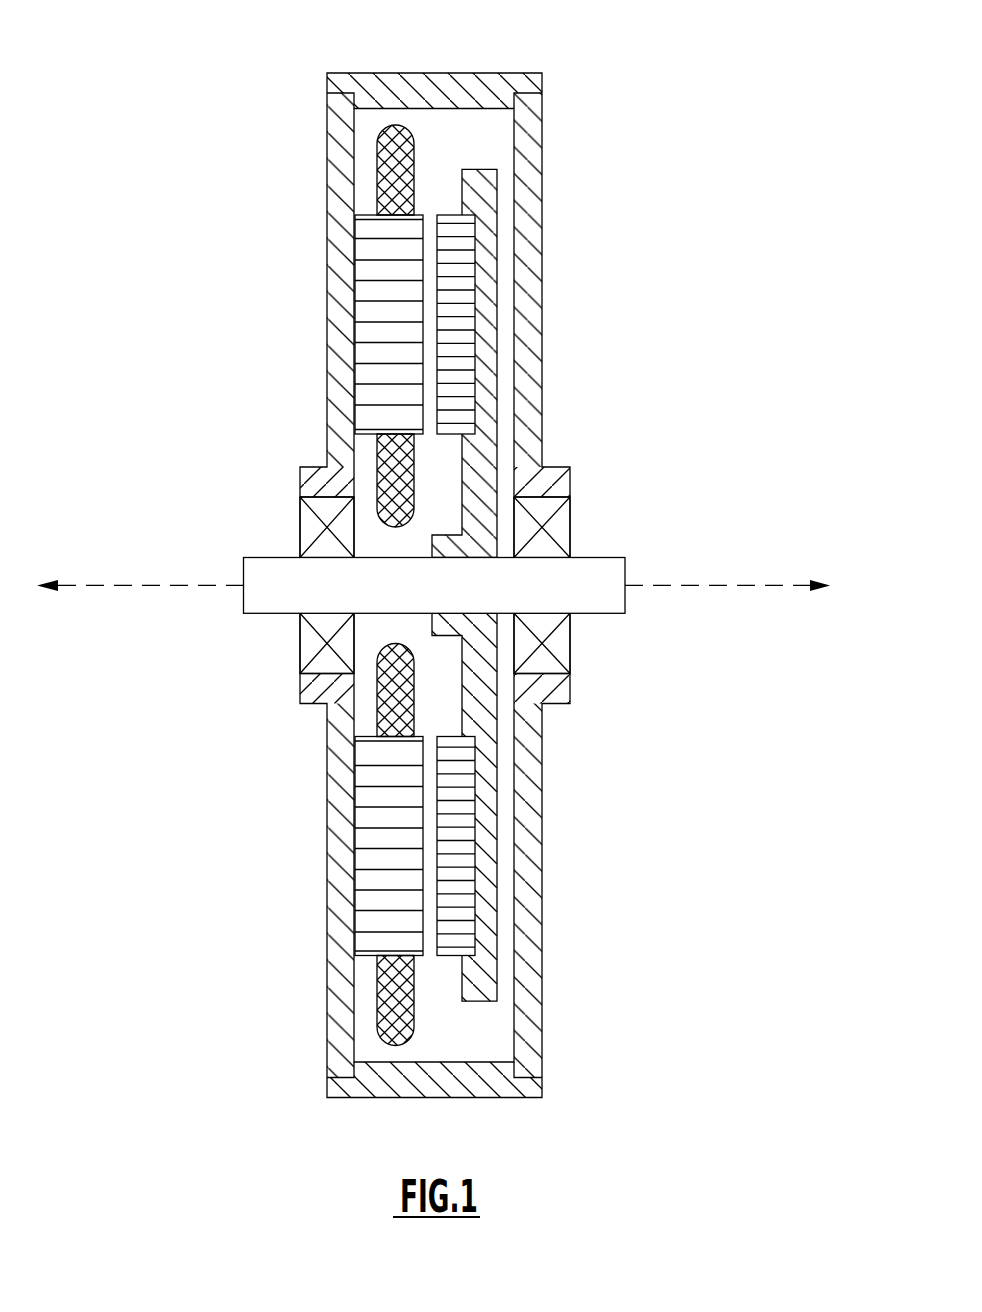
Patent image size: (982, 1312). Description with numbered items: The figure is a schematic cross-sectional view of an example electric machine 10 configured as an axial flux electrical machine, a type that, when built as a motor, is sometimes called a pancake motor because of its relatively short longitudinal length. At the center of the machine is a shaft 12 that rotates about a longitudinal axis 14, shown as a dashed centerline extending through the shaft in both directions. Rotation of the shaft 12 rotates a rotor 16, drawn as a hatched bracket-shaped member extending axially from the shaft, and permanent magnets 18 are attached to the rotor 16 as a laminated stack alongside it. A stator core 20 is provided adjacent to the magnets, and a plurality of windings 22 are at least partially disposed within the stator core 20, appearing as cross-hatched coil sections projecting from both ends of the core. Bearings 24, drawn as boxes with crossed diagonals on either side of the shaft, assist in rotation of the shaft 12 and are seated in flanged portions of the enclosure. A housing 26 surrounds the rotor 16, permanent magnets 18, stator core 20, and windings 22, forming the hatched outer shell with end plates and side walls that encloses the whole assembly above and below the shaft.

The electric machine 10 is at (461, 548).
The shaft 12 is at (613, 573).
The longitudinal axis 14 is at (772, 585).
The rotor 16 is at (490, 202).
The permanent magnets 18 is at (460, 305).
The stator core 20 is at (378, 370).
The windings 22 is at (387, 190).
The bearings 24 is at (306, 525).
The housing 26 is at (427, 73).